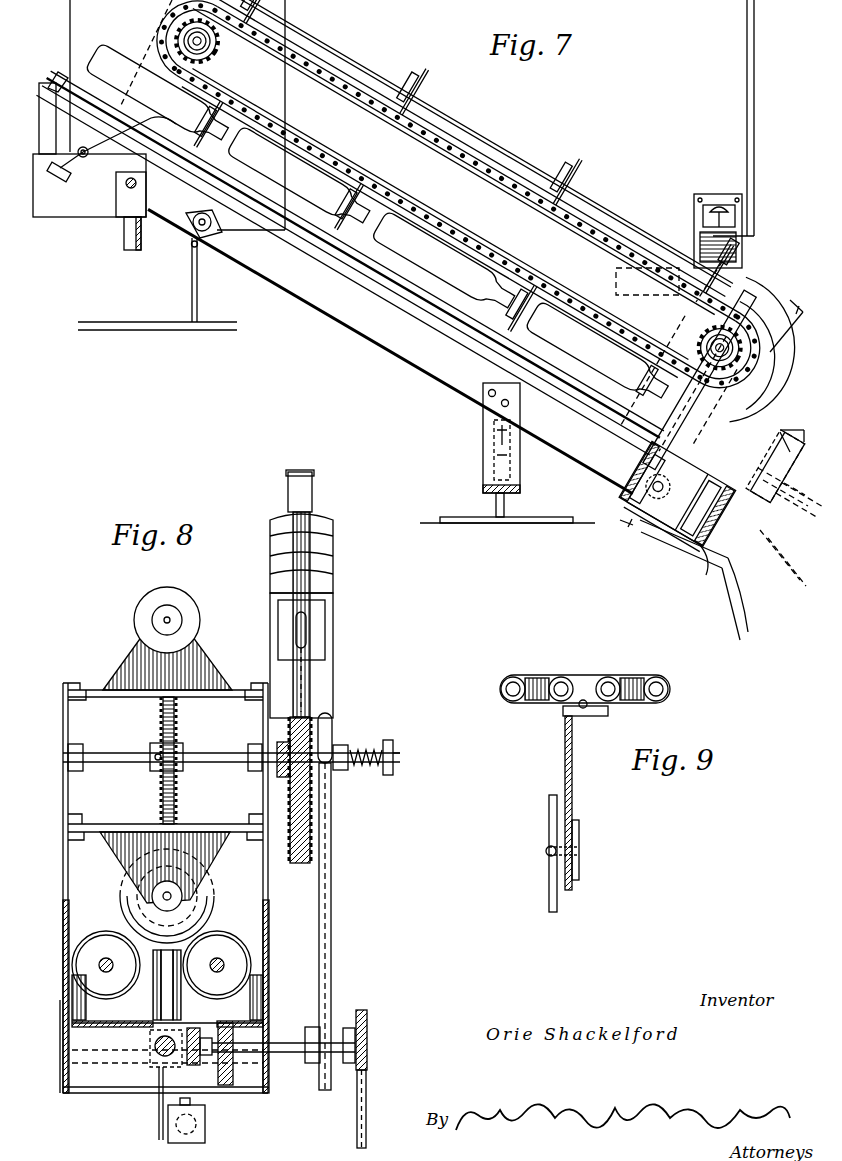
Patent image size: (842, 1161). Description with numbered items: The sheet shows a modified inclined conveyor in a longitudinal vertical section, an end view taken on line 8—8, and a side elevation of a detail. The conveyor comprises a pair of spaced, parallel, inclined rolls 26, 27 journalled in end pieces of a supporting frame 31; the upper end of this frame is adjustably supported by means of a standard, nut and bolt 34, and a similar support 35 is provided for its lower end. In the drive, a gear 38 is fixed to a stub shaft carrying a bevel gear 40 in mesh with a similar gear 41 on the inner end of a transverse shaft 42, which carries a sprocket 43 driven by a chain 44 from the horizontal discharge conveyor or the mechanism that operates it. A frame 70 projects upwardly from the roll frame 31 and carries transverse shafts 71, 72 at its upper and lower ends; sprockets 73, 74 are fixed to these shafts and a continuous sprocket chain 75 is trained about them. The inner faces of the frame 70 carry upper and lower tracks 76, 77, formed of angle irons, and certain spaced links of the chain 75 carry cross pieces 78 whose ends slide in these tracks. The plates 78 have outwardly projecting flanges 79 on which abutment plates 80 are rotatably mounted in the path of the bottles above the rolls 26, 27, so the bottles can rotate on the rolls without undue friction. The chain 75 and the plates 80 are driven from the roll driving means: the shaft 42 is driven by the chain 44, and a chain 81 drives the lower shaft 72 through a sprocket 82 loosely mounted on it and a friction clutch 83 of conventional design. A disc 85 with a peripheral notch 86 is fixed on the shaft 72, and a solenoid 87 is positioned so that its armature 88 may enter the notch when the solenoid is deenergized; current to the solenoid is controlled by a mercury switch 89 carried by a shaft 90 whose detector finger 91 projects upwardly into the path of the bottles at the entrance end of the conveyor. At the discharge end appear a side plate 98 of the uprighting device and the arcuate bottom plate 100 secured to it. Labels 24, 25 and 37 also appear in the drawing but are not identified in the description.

In FIG. 7, the section line 8— 8 is at (704, 408).
In FIG. 7, the bottle 24 is at (118, 47).
In FIG. 8, the bottle 24 is at (124, 880).
In FIG. 7, the discharge guide 25 is at (782, 430).
In FIG. 8, the inclined roll 26 is at (100, 935).
In FIG. 7, the inclined roll 27 is at (342, 252).
In FIG. 8, the inclined roll 27 is at (246, 927).
In FIG. 7, the supporting frame 31 is at (356, 326).
In FIG. 8, the supporting frame 31 is at (64, 1090).
In FIG. 7, the bolt 34 is at (126, 238).
In FIG. 7, the support 35 is at (483, 446).
In FIG. 7, the bearing 37 is at (776, 432).
In FIG. 7, the gear 38 is at (666, 545).
In FIG. 7, the bevel gear 40 is at (638, 516).
In FIG. 7, the bevel gear 41 is at (628, 493).
In FIG. 8, the bevel gear 41 is at (158, 1093).
In FIG. 8, the transverse shaft 42 is at (280, 1042).
In FIG. 8, the sprocket 43 is at (370, 1041).
In FIG. 7, the chain 44 is at (692, 574).
In FIG. 8, the chain 44 is at (370, 1108).
In FIG. 7, the frame 70 is at (462, 168).
In FIG. 8, the frame 70 is at (62, 912).
In FIG. 7, the transverse shaft 71 is at (188, 38).
In FIG. 7, the transverse shaft 72 is at (702, 392).
In FIG. 8, the transverse shaft 72 is at (200, 757).
In FIG. 7, the sprocket 73 is at (222, 58).
In FIG. 7, the sprocket 74 is at (692, 340).
In FIG. 8, the sprocket 74 is at (160, 750).
In FIG. 7, the sprocket chain 75 is at (346, 98).
In FIG. 8, the sprocket chain 75 is at (178, 720).
In FIG. 9, the sprocket chain 75 is at (660, 686).
In FIG. 8, the upper track 76 is at (78, 684).
In FIG. 8, the lower track 77 is at (82, 828).
In FIG. 9, the cross piece 78 is at (598, 715).
In FIG. 7, the flange 79 is at (560, 190).
In FIG. 8, the flange 79 is at (134, 656).
In FIG. 9, the flange 79 is at (572, 800).
In FIG. 7, the abutment plate 80 is at (573, 176).
In FIG. 8, the abutment plate 80 is at (175, 601).
In FIG. 9, the abutment plate 80 is at (549, 902).
In FIG. 7, the chain 81 is at (742, 398).
In FIG. 8, the chain 81 is at (332, 914).
In FIG. 8, the sprocket 82 is at (334, 730).
In FIG. 8, the friction clutch 83 is at (350, 746).
In FIG. 7, the disc 85 is at (764, 352).
In FIG. 8, the disc 85 is at (312, 698).
In FIG. 7, the notch 86 is at (748, 280).
In FIG. 8, the notch 86 is at (312, 655).
In FIG. 7, the solenoid 87 is at (694, 237).
In FIG. 8, the solenoid 87 is at (328, 545).
In FIG. 7, the armature 88 is at (744, 260).
In FIG. 8, the armature 88 is at (308, 630).
In FIG. 7, the mercury switch 89 is at (60, 180).
In FIG. 8, the mercury switch 89 is at (207, 1125).
In FIG. 7, the shaft 90 is at (85, 160).
In FIG. 7, the detector finger 91 is at (136, 127).
In FIG. 8, the detector finger 91 is at (153, 1024).
In FIG. 7, the side plate 98 is at (742, 496).
In FIG. 7, the arcuate bottom plate 100 is at (726, 628).